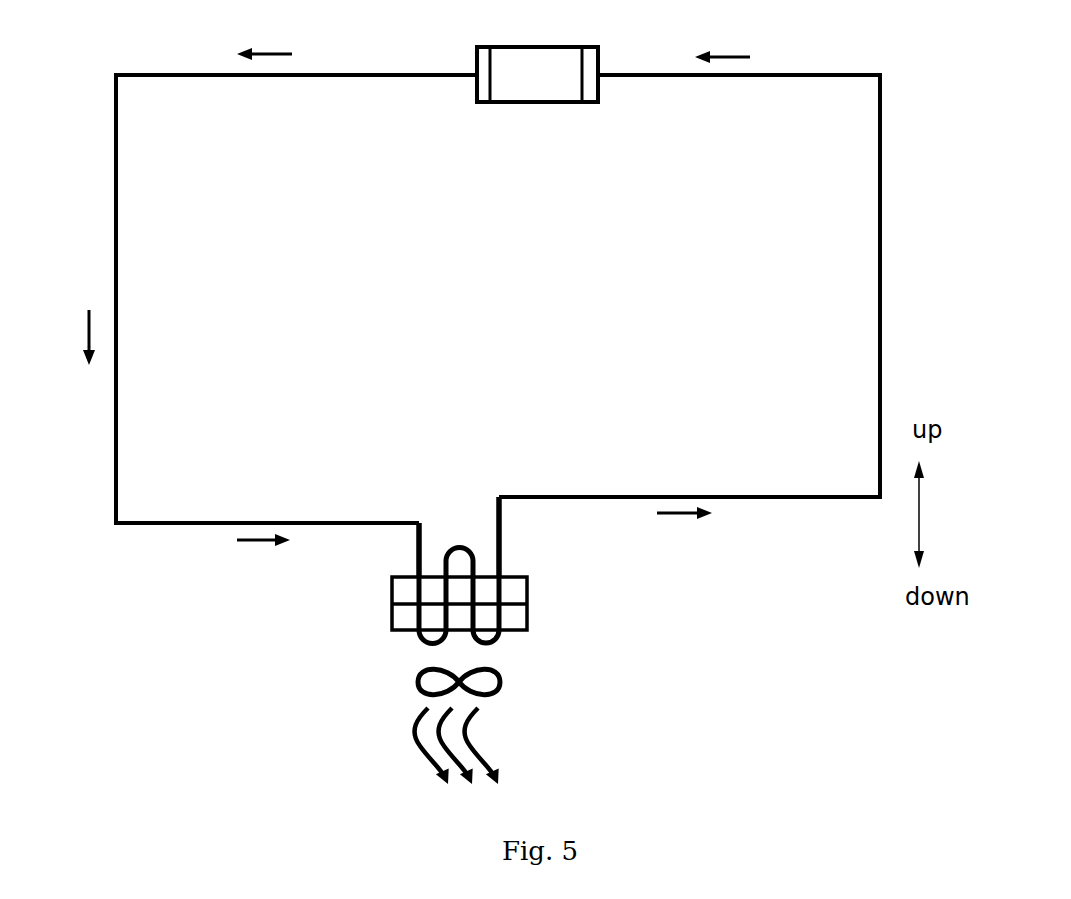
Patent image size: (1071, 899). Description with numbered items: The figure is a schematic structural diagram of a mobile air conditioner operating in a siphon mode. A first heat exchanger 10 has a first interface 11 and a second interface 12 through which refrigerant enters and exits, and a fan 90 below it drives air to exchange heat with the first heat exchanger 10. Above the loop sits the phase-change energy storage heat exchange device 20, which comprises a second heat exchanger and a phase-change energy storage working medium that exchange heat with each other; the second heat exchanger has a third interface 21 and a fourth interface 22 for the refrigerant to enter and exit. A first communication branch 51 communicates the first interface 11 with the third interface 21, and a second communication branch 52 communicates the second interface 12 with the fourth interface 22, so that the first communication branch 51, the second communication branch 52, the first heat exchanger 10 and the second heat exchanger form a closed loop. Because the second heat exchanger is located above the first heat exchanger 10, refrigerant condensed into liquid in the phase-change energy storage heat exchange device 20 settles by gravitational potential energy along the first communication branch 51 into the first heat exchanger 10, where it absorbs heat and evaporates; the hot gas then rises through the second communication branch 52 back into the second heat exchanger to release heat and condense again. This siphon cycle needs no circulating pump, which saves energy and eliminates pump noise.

The first heat exchanger 10 is at (527, 597).
The first interface 11 is at (418, 575).
The second interface 12 is at (499, 575).
The phase-change energy storage heat exchange device 20 is at (598, 62).
The third interface 21 is at (477, 75).
The fourth interface 22 is at (600, 80).
The first communication branch 51 is at (116, 205).
The second communication branch 52 is at (882, 223).
The fan 90 is at (418, 680).